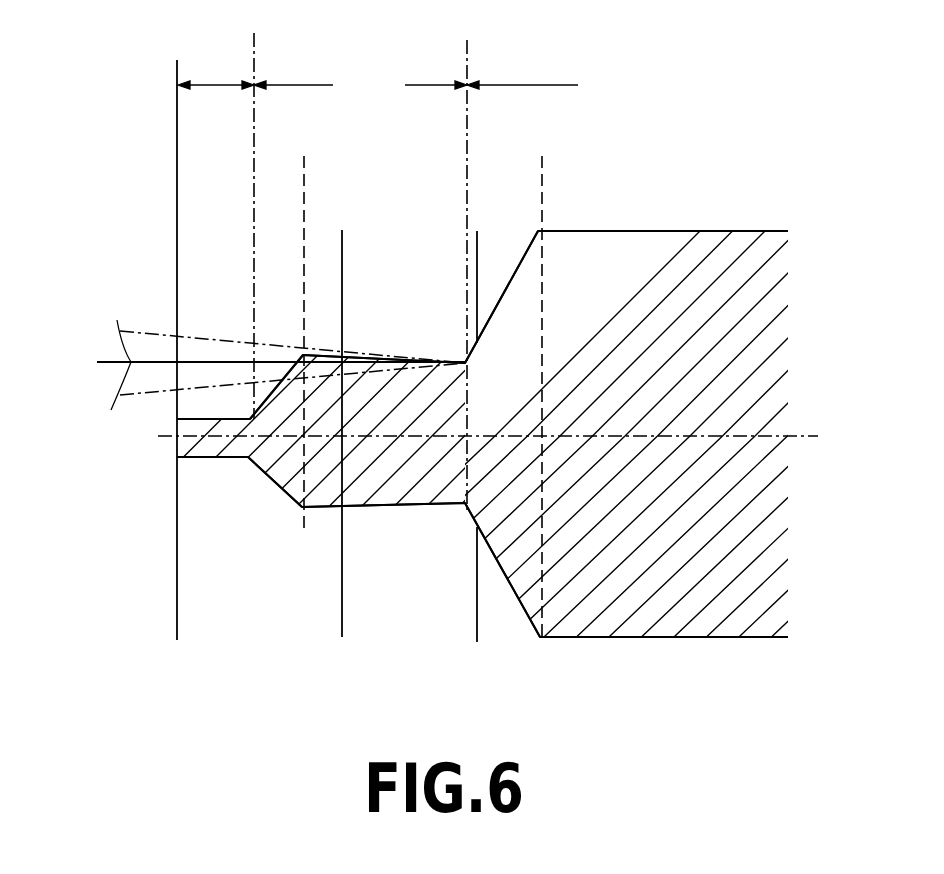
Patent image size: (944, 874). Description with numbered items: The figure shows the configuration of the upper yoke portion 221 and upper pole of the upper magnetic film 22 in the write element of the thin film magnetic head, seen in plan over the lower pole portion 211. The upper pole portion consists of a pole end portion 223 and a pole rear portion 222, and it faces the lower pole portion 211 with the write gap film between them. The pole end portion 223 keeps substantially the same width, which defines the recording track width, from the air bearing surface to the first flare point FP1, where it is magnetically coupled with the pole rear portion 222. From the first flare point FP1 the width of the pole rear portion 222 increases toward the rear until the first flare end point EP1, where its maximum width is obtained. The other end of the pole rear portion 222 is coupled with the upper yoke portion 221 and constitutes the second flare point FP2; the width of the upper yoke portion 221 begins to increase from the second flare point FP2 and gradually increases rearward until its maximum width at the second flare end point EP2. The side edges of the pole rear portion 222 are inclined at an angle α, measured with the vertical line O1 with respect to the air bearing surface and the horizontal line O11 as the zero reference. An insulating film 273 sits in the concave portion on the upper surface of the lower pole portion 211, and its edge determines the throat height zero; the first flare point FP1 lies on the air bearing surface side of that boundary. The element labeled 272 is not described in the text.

The upper magnetic film 22 is at (722, 224).
The upper yoke portion 221 is at (553, 89).
The pole rear portion 222 is at (360, 89).
The pole end portion 223 is at (217, 86).
The lower pole portion 211 is at (246, 592).
The insulating film 273 is at (390, 592).
The inclined surface 272 is at (497, 592).
The vertical line O1 is at (509, 432).
The horizontal line O11 is at (249, 365).
The first flare point FP1 is at (272, 211).
The second flare point FP2 is at (486, 260).
The first flare end point EP1 is at (316, 327).
The second flare end point EP2 is at (561, 379).